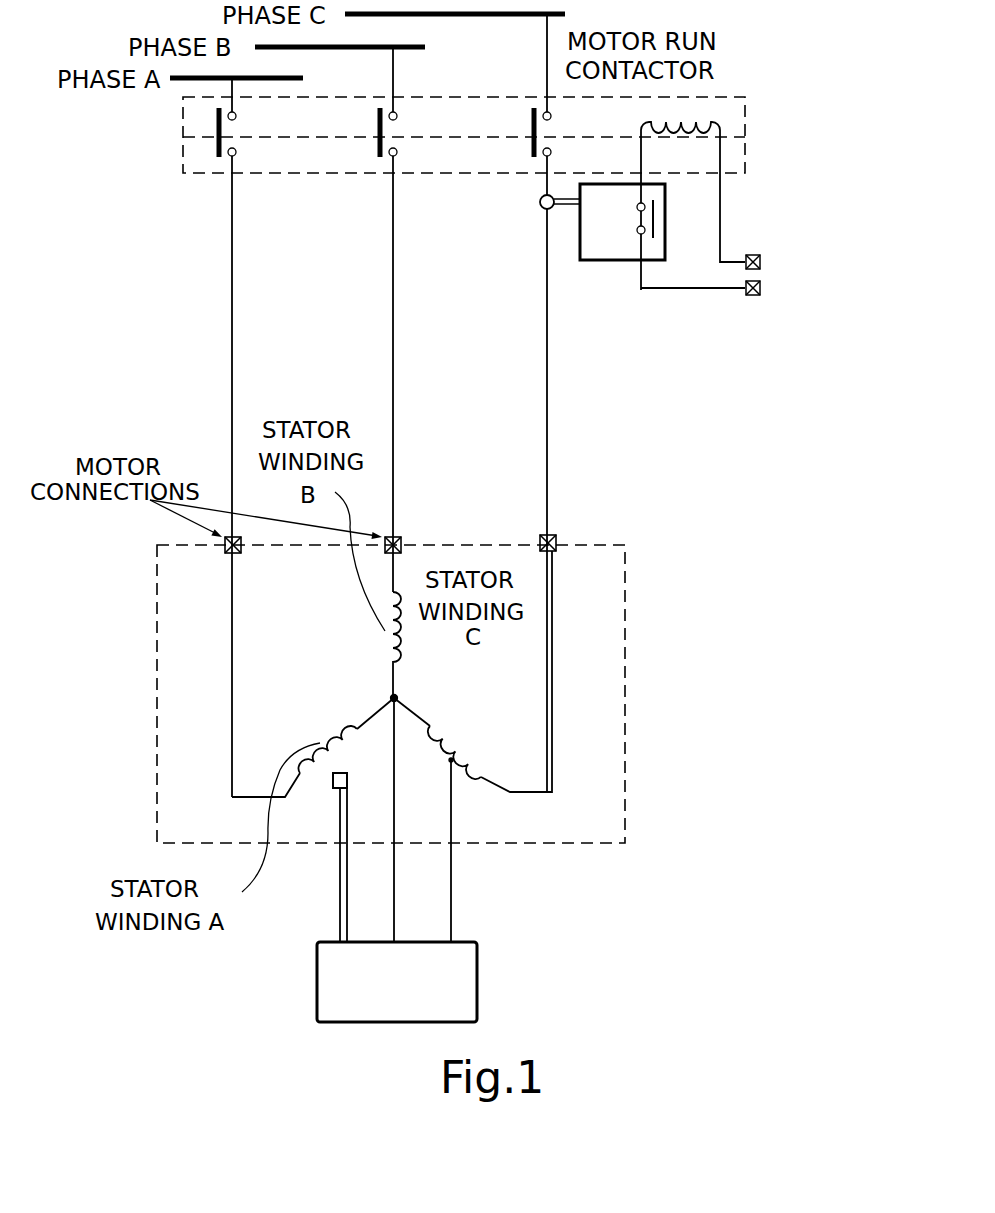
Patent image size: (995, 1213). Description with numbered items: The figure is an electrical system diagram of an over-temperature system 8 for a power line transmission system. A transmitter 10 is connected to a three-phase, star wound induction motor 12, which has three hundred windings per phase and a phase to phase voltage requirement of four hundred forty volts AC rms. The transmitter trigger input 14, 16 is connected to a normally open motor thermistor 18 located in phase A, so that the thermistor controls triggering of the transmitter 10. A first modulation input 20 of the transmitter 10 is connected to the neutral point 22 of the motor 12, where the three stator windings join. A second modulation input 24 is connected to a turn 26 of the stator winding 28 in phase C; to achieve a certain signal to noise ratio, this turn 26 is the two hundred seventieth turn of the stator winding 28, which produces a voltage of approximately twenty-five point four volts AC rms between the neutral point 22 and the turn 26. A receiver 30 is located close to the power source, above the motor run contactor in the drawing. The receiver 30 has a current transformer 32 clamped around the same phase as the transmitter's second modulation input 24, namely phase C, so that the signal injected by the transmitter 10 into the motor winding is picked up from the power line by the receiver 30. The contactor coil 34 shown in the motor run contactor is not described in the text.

The over-temperature system 8 is at (188, 396).
The transmitter 10 is at (461, 985).
The three-phase, star wound induction motor 12 is at (613, 747).
The transmitter trigger input 14 is at (318, 865).
The transmitter trigger input 16 is at (364, 865).
The motor thermistor 18 is at (359, 786).
The first modulation input 20 is at (414, 820).
The neutral point 22 is at (371, 692).
The second modulation input 24 is at (469, 851).
The turn 26 is at (432, 777).
The stator winding 28 is at (460, 733).
The receiver 30 is at (742, 224).
The current transformer 32 is at (540, 204).
The contactor coil 34 is at (716, 204).